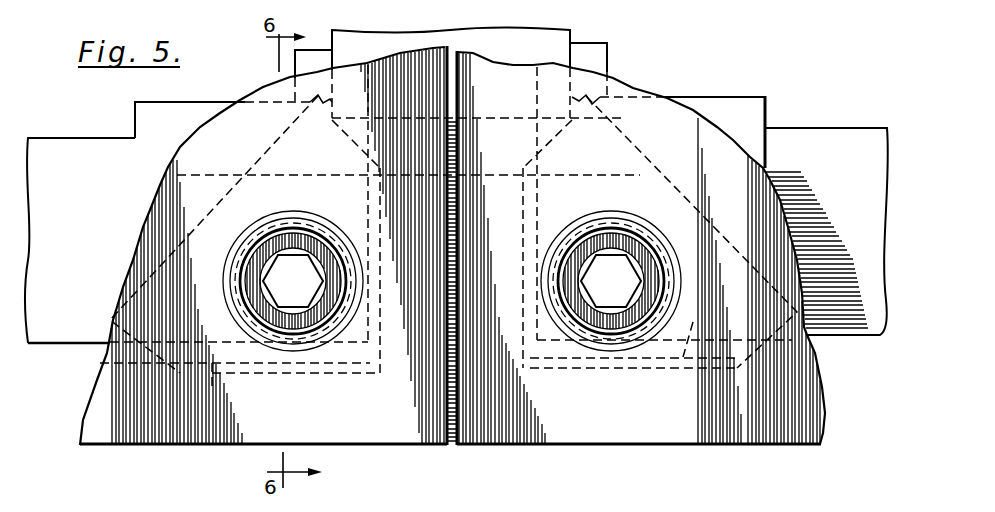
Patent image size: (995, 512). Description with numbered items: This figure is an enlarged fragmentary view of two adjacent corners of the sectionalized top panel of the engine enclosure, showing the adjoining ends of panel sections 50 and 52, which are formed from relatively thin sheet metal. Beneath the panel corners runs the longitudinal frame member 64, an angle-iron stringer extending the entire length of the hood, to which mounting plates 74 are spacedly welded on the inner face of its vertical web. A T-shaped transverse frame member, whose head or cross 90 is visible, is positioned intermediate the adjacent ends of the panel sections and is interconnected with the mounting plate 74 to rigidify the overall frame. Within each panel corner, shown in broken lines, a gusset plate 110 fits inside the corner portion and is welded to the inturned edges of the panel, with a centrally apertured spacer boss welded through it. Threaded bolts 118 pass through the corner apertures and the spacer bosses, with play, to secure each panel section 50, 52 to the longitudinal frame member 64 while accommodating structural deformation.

The panel section 50 is at (251, 117).
The panel section 52 is at (627, 89).
The mounting plate 74 is at (611, 65).
The head or cross of the transverse frame member 90 is at (542, 37).
The longitudinal frame member 64 is at (845, 327).
The gusset plate 110 is at (680, 369).
The threaded bolt 118 is at (452, 281).